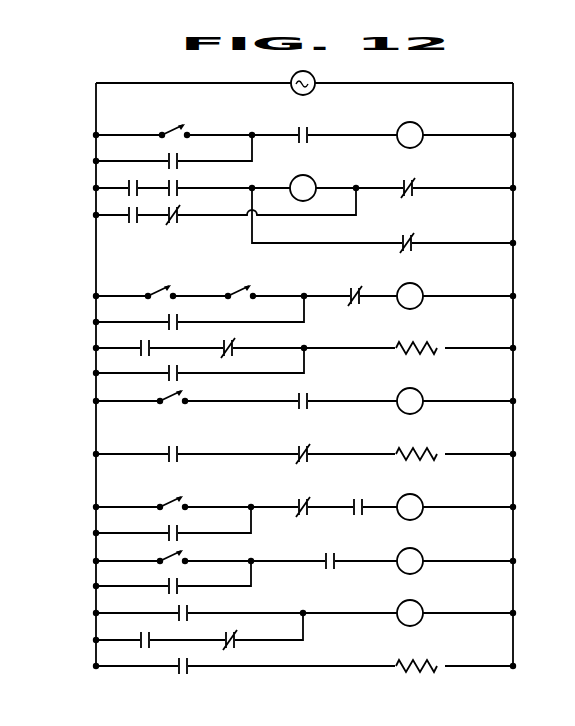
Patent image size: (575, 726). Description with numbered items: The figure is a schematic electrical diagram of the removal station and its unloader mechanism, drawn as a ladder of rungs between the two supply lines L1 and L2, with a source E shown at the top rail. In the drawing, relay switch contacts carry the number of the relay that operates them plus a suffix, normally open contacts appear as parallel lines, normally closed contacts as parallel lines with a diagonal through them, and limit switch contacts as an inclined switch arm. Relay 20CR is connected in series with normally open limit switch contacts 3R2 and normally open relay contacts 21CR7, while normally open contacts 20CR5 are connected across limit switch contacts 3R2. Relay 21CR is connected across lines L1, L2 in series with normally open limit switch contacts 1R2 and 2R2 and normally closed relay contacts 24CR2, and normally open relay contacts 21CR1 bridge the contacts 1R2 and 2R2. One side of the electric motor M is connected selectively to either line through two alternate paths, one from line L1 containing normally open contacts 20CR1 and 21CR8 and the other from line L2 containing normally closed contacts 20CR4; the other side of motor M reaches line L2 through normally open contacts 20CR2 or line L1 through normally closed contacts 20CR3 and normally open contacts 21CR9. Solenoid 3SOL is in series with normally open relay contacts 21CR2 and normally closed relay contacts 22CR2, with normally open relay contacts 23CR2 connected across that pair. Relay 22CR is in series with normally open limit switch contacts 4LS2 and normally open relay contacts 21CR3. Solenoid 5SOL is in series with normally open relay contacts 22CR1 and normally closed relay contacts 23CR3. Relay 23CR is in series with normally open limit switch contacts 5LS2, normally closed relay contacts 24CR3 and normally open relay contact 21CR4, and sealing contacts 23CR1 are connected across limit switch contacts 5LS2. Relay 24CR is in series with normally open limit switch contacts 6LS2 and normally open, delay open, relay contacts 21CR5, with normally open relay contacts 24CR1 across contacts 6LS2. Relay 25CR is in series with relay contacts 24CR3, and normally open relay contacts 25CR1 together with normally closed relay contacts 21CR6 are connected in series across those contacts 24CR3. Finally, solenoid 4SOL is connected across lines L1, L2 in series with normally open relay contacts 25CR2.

The line L1 is at (93, 112).
The line L2 is at (513, 115).
The AC power source E is at (313, 76).
The electric motor M is at (311, 177).
The normally open limit switch contacts 3R2 is at (180, 125).
The normally open relay contacts 21CR7 is at (318, 117).
The relay 20CR is at (404, 124).
The normally open contacts 20CR5 is at (172, 156).
The normally open contacts 21CR8 is at (127, 186).
The normally open contacts 20CR1 is at (176, 183).
The normally open contacts 20CR2 is at (409, 182).
The normally open contacts 21CR9 is at (127, 213).
The normally closed contacts 20CR3 is at (177, 210).
The normally closed contacts 20CR4 is at (409, 237).
The normally open limit switch contacts 1R2 is at (170, 285).
The normally open limit switch contacts 2R2 is at (249, 285).
The normally closed relay contacts 24CR2 is at (362, 272).
The relay 21CR is at (405, 285).
The normally open relay contacts 21CR1 is at (172, 316).
The normally open relay contacts 21CR2 is at (150, 345).
The normally closed relay contacts 22CR2 is at (233, 350).
The normally open relay contacts 23CR2 is at (178, 370).
The solenoid 3SOL is at (410, 345).
The normally open limit switch contacts 4LS2 is at (144, 392).
The normally open relay contacts 21CR3 is at (305, 398).
The relay 22CR is at (412, 391).
The normally open relay contacts 22CR1 is at (184, 432).
The normally closed relay contacts 23CR3 is at (320, 432).
The solenoid 5SOL is at (414, 450).
The normally open limit switch contacts 5LS2 is at (183, 497).
The normally closed relay contacts 24CR3 is at (306, 501).
The normally open relay contact 21CR4 is at (372, 494).
The relay 23CR is at (414, 497).
The sealing contacts 23CR1 is at (176, 527).
The normally open limit switch contacts 6LS2 is at (183, 552).
The normally open, delay open, relay contacts 21CR5 is at (332, 554).
The relay 24CR is at (414, 552).
The normally open relay contacts 24CR1 is at (177, 580).
The relay 25CR is at (413, 602).
The normally open relay contacts 25CR1 is at (143, 634).
The normally closed relay contacts 21CR6 is at (226, 641).
The normally open relay contacts 25CR2 is at (184, 659).
The solenoid 4SOL is at (417, 662).